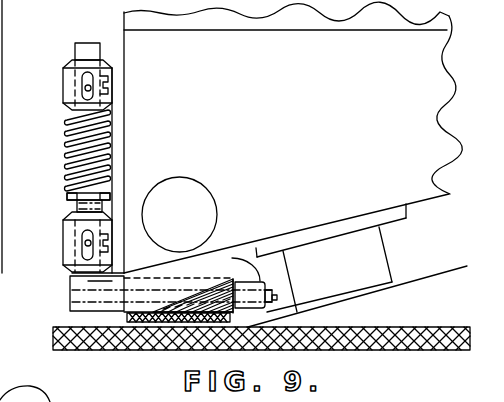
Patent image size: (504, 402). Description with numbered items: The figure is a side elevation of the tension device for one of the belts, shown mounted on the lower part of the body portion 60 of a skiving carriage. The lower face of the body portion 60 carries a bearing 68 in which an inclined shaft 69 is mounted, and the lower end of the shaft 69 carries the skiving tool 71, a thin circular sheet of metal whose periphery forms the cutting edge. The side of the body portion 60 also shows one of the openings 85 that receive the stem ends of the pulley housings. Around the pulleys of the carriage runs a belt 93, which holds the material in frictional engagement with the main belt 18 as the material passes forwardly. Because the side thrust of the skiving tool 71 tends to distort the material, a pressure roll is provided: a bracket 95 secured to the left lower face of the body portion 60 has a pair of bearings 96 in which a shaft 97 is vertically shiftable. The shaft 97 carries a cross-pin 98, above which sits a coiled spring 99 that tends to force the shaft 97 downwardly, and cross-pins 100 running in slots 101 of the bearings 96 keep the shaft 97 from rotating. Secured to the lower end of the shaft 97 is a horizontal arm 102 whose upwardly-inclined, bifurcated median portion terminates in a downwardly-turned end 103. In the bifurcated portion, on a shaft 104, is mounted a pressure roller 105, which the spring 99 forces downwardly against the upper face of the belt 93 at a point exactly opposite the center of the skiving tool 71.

The main belt 18 is at (261, 351).
The body portion of the carriage 60 is at (293, 137).
The bearing 68 is at (331, 221).
The shaft 69 is at (329, 269).
The skiving tool 71 is at (389, 286).
The opening 85 is at (179, 214).
The belt 93 is at (127, 318).
The bracket 95 is at (125, 72).
The bearing 96 is at (63, 97).
The shaft 97 is at (77, 210).
The cross-pin 98 is at (67, 193).
The coiled spring 99 is at (66, 140).
The cross-pin 100 is at (88, 88).
The slot 101 is at (88, 240).
The horizontal arm 102 is at (70, 298).
The downwardly-turned end 103 is at (245, 326).
The shaft 104 is at (272, 293).
The pressure roller 105 is at (243, 288).